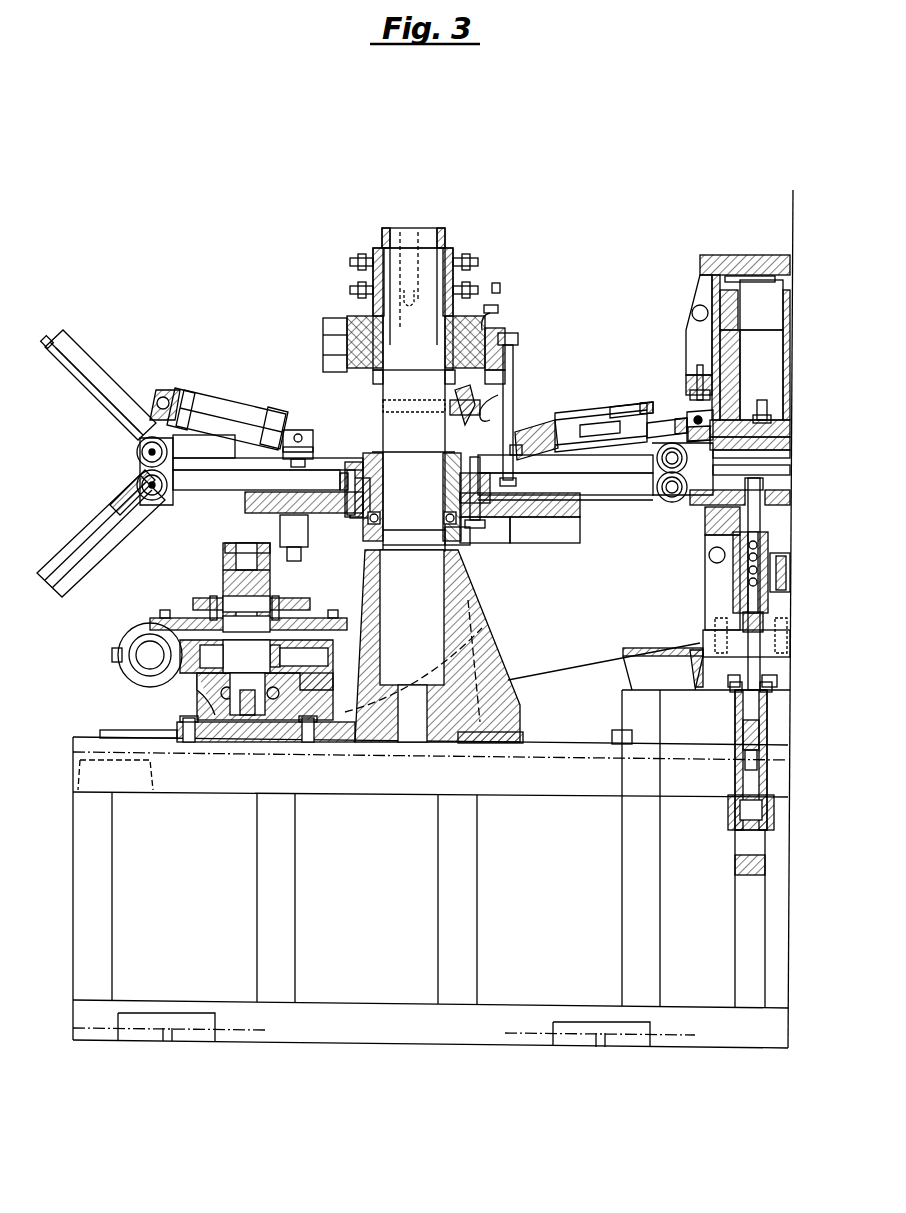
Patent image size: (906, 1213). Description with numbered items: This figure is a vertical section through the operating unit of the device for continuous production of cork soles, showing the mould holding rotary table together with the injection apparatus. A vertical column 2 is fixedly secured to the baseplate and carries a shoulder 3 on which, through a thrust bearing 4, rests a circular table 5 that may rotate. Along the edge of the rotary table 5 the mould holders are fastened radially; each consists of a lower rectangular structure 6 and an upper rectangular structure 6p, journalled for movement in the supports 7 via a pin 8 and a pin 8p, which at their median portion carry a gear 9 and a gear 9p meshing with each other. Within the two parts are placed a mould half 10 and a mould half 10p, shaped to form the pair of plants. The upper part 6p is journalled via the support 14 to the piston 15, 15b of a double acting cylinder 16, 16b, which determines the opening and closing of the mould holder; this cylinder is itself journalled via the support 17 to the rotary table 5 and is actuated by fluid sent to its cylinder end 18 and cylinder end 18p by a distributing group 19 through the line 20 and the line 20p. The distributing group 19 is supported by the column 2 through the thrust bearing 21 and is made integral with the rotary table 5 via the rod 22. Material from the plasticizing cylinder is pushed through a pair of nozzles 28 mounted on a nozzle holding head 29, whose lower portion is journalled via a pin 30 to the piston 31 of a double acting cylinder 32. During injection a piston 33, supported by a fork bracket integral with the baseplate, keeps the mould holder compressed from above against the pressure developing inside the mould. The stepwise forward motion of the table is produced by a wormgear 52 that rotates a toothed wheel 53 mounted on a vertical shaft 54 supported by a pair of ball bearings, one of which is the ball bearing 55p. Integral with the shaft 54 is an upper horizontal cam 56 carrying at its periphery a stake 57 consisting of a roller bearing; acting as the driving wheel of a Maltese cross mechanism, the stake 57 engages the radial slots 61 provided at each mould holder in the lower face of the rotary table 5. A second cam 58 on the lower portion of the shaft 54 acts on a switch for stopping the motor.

The vertical column 2 is at (440, 640).
The shoulder 3 is at (368, 525).
The thrust bearing 4 is at (458, 532).
The table 5 is at (493, 530).
The radial slots 61 is at (550, 530).
The rectangular structure 6 is at (105, 530).
The rectangular structure 6p is at (95, 372).
The supports 7 is at (165, 498).
The pin 8 is at (155, 490).
The pin 8p is at (145, 453).
The gear 9 is at (180, 470).
The gear 9p is at (175, 455).
The mould half 10 is at (85, 530).
The mould half 10p is at (100, 410).
The support 14 is at (166, 396).
The piston 15 is at (185, 395).
The piston 15b is at (672, 425).
The double acting cylinder 16 is at (255, 405).
The double acting cylinder 16b is at (570, 430).
The support 17 is at (313, 432).
The cylinder end 18 is at (535, 425).
The cylinder end 18p is at (615, 405).
The distributing group 19 is at (497, 332).
The line 20 is at (487, 308).
The line 20p is at (490, 395).
The thrust bearing 21 is at (372, 372).
The rod 22 is at (513, 370).
The nozzles 28 is at (720, 510).
The nozzle holding head 29 is at (735, 600).
The pin 30 is at (740, 610).
The piston 31 is at (745, 680).
The double acting cylinder 32 is at (750, 775).
The piston 33 is at (700, 300).
The wormgear 52 is at (150, 665).
The toothed wheel 53 is at (315, 645).
The vertical shaft 54 is at (230, 680).
The ball bearing 55p is at (300, 612).
The upper horizontal cam 56 is at (225, 560).
The stake 57 is at (300, 530).
The second cam 58 is at (298, 612).